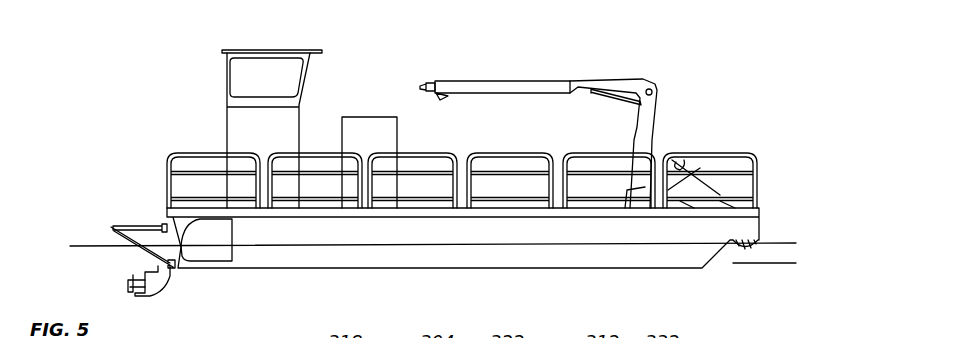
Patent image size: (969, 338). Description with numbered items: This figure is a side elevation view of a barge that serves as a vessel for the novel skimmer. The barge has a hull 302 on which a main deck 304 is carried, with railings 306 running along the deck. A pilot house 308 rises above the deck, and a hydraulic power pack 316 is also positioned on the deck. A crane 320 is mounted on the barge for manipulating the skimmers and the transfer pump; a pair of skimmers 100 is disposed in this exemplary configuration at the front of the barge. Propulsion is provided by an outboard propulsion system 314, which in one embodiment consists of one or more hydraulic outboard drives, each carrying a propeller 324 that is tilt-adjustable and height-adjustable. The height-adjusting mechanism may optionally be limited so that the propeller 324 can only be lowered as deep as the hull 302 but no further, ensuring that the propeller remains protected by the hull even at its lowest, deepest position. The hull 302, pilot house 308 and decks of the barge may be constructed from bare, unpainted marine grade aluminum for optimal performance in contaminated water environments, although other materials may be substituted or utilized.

The skimmer 100 is at (717, 180).
The hull 302 is at (325, 254).
The main deck 304 is at (200, 205).
The railings 306 is at (168, 155).
The pilot house 308 is at (280, 48).
The outboard propulsion system 314 is at (162, 278).
The hydraulic power pack 316 is at (367, 125).
The crane 320 is at (517, 83).
The propeller 324 is at (132, 276).